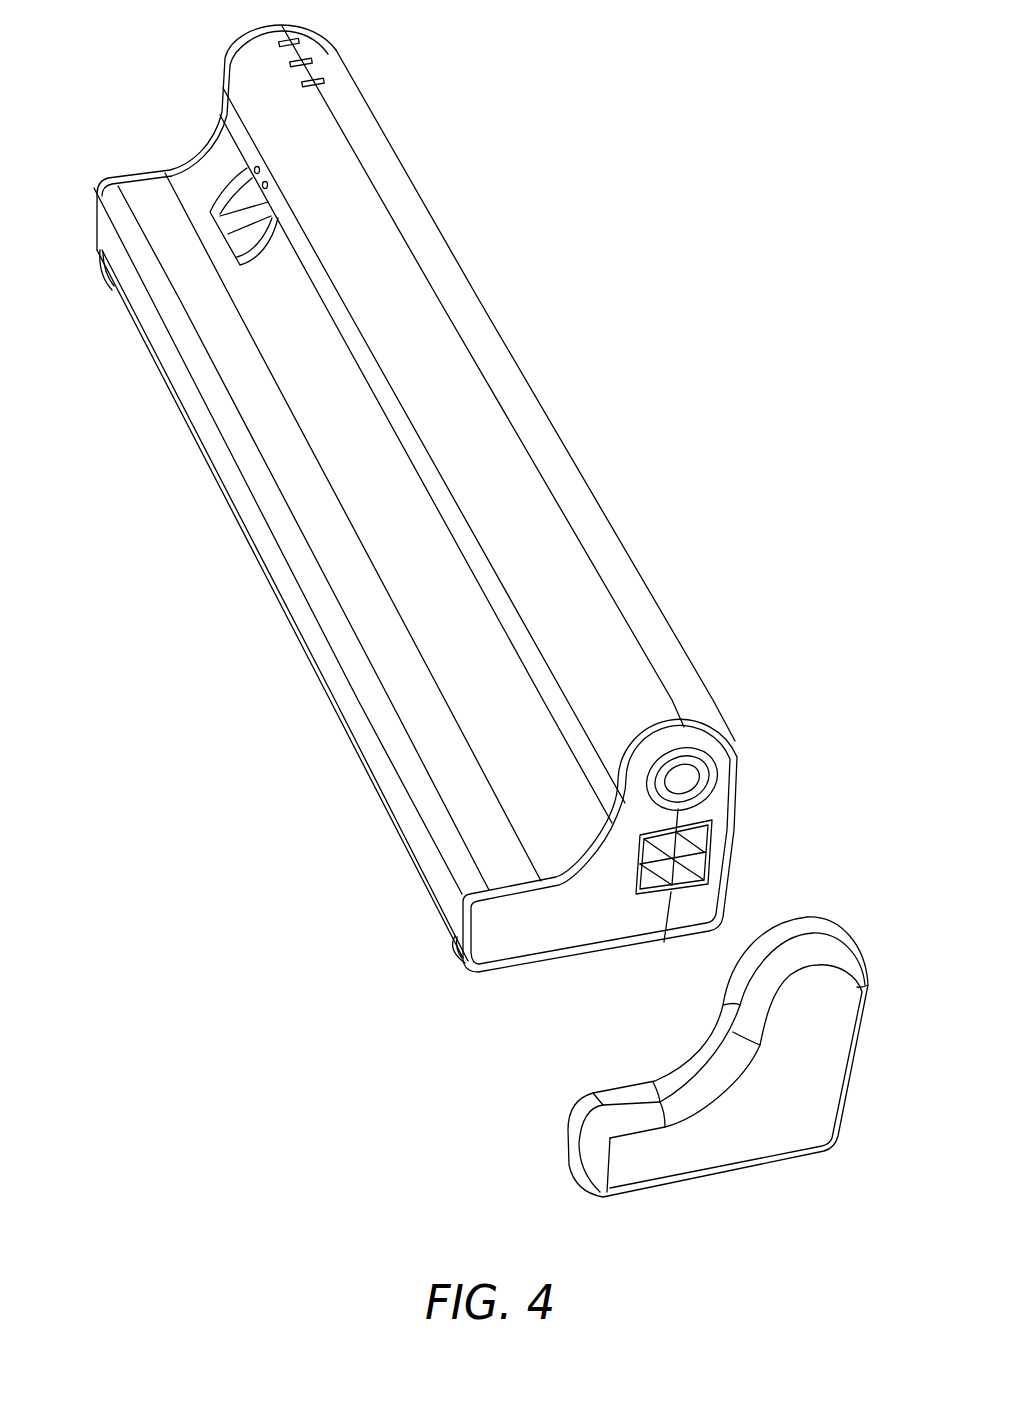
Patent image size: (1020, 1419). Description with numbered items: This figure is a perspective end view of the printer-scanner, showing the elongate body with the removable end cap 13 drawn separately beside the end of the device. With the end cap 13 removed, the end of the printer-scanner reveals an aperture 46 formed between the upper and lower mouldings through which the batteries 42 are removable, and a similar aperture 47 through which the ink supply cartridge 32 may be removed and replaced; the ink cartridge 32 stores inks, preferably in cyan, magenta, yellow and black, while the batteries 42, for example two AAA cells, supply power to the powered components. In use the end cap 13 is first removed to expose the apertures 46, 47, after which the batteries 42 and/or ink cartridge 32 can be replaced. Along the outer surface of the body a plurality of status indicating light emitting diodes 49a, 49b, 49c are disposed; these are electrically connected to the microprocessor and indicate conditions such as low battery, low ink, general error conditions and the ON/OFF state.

The removable end cap 13 is at (820, 1107).
The ink supply cartridge 32 is at (708, 843).
The batteries 42 is at (684, 780).
The aperture 46 is at (707, 752).
The aperture 47 is at (633, 882).
The status indicating light emitting diode 49a is at (299, 41).
The status indicating light emitting diode 49b is at (314, 62).
The status indicating light emitting diode 49c is at (330, 80).